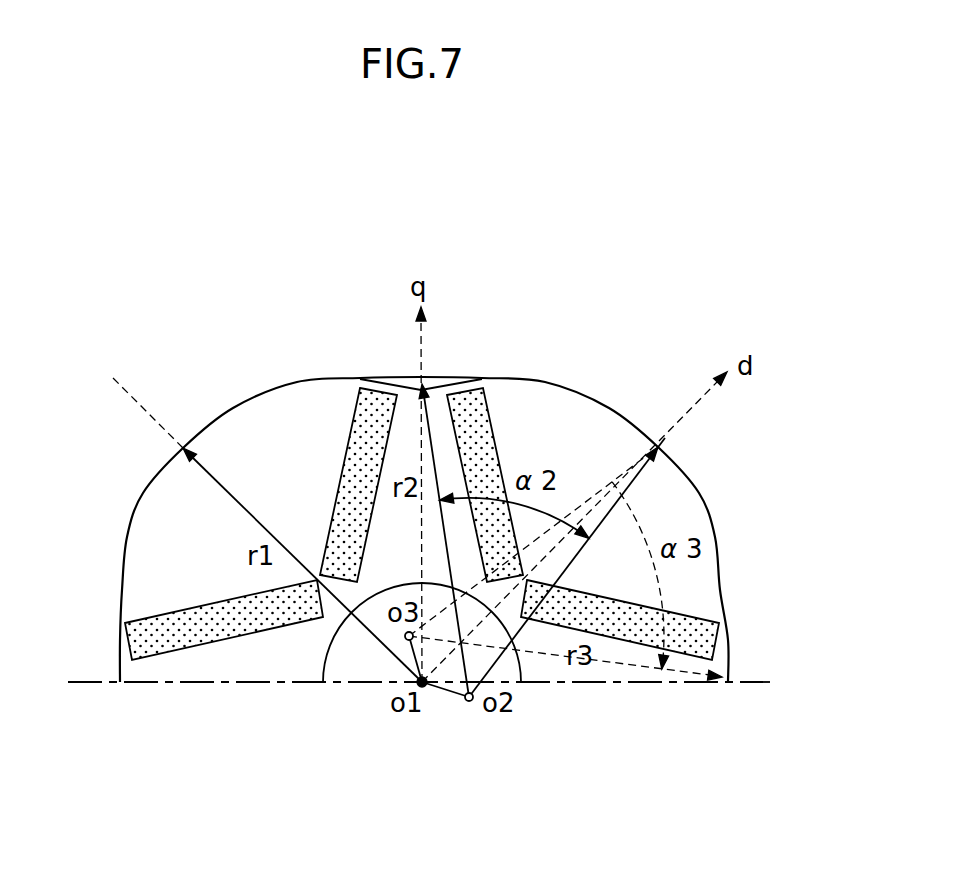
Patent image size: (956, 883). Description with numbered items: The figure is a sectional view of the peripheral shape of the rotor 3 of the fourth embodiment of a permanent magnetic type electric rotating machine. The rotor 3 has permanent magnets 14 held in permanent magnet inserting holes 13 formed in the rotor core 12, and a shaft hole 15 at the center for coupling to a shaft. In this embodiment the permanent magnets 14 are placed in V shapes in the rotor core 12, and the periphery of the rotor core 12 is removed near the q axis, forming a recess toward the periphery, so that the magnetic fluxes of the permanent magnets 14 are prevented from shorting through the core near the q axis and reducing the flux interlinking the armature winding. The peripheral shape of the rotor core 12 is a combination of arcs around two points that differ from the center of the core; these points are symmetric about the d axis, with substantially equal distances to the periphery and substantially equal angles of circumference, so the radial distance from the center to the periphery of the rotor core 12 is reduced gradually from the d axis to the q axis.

The rotor 3 is at (705, 508).
The rotor core 12 is at (703, 582).
The permanent magnet inserting hole 13 is at (353, 405).
The permanent magnet 14 is at (125, 637).
The shaft hole 15 is at (360, 668).